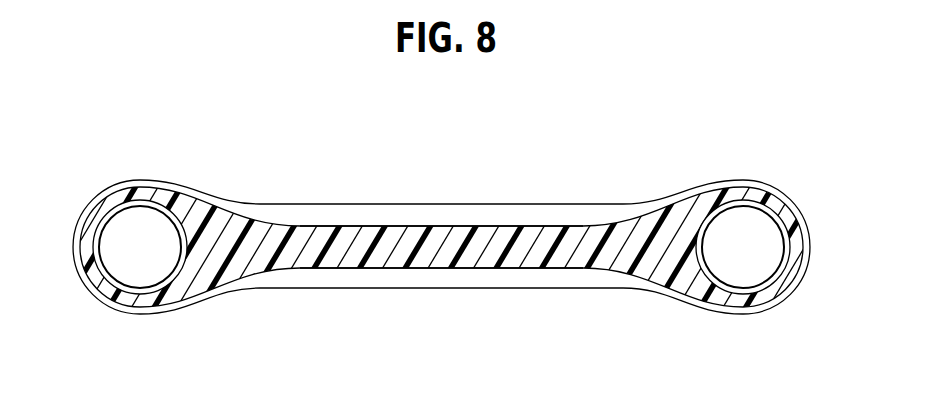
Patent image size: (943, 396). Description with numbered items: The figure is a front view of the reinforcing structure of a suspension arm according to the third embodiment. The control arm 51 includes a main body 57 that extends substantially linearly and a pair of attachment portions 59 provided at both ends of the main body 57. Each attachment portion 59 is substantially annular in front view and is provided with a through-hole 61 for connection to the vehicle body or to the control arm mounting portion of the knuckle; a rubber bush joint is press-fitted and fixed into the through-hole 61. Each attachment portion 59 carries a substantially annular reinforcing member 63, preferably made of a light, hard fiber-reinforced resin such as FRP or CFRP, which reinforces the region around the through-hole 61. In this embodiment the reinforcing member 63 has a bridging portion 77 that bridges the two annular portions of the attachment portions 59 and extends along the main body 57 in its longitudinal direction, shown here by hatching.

The control arm 51 is at (568, 146).
The main body 57 is at (672, 175).
The attachment portions 59 is at (207, 175).
The through-hole 61 is at (130, 284).
The reinforcing member 63 is at (92, 261).
The bridging portion 77 is at (460, 259).